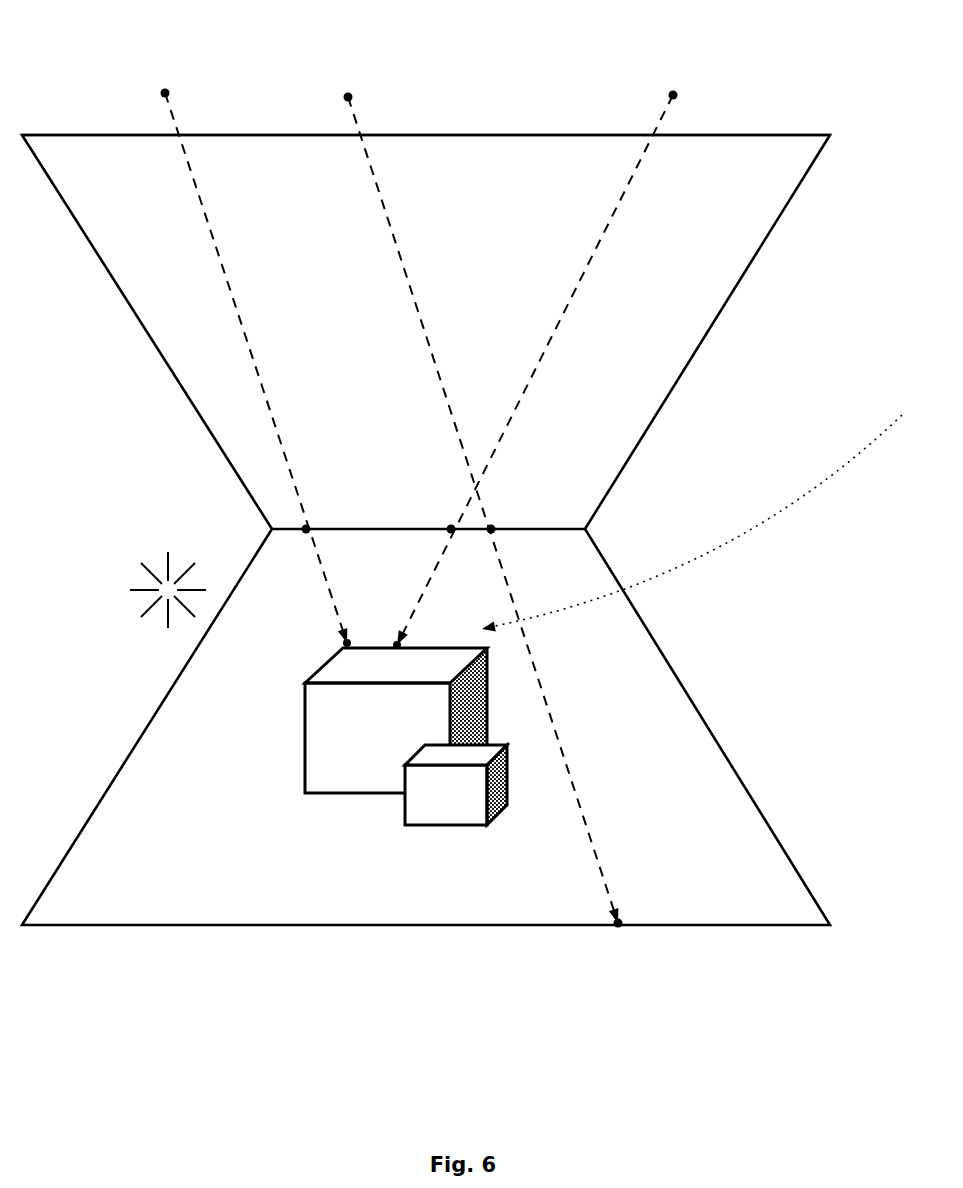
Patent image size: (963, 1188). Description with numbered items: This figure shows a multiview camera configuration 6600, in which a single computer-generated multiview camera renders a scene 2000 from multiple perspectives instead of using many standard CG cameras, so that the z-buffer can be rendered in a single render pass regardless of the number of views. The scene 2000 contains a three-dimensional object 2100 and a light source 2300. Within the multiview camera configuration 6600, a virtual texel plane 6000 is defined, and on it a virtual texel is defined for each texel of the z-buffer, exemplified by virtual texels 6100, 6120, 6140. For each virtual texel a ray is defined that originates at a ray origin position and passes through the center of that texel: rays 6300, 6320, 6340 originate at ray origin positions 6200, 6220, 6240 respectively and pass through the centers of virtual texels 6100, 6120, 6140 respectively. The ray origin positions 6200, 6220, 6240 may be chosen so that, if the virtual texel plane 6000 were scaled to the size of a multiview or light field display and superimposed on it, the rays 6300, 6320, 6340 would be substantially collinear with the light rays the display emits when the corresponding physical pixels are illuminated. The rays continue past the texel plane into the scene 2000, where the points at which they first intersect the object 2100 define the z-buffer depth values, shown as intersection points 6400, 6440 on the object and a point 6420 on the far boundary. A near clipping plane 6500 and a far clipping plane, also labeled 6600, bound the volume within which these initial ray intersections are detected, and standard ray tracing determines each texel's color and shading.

The CG scene 2000 is at (711, 484).
The 3D object 2100 is at (305, 712).
The light source 2300 is at (152, 628).
The virtual texel plane 6000 is at (553, 527).
The virtual texel 6100 is at (493, 525).
The virtual texel 6120 is at (451, 525).
The virtual texel 6140 is at (308, 525).
The ray origin position 6200 is at (674, 93).
The ray origin position 6220 is at (349, 95).
The ray origin position 6240 is at (166, 92).
The ray 6300 is at (588, 265).
The ray 6320 is at (401, 258).
The ray 6340 is at (213, 243).
The first ray intersection point 6400 is at (397, 642).
The second ray intersection point 6420 is at (610, 921).
The third ray intersection point 6440 is at (345, 642).
The near clipping plane 6500 is at (73, 135).
The multiview camera configuration 6600 is at (808, 170).